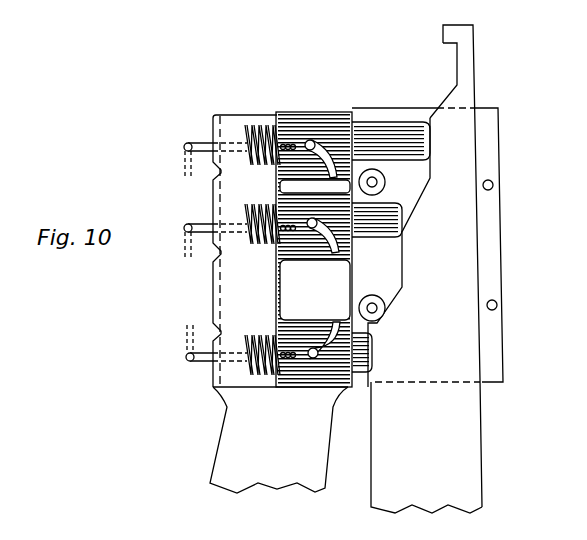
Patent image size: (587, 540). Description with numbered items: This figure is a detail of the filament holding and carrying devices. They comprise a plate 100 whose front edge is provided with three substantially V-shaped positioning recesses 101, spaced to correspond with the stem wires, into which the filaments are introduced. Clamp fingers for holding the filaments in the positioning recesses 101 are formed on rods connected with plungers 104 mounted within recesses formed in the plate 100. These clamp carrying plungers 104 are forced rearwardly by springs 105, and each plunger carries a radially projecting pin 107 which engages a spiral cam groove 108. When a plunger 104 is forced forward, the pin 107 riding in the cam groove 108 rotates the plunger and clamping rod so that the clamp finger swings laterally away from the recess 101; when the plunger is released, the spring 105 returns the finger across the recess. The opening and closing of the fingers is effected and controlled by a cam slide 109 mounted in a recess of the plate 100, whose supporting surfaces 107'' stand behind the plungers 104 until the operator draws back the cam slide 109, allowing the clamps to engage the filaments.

The plate 100 is at (213, 287).
The positioning recesses 101 is at (213, 176).
The plungers 104 is at (375, 240).
The springs 105 is at (268, 250).
The pin 107 is at (300, 249).
The supporting surfaces 107'' is at (416, 247).
The spiral cam groove 108 is at (329, 238).
The cam slide 109 is at (460, 333).